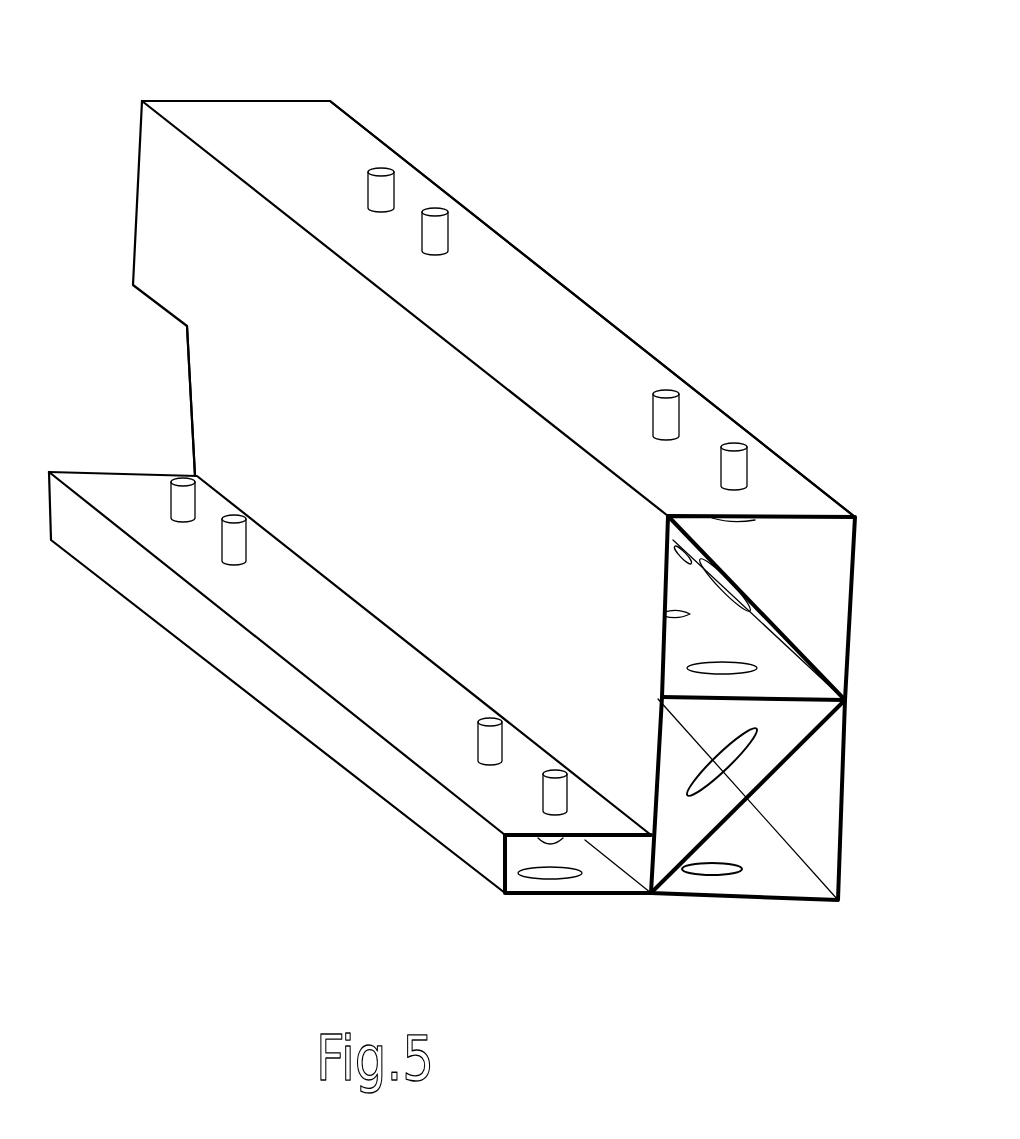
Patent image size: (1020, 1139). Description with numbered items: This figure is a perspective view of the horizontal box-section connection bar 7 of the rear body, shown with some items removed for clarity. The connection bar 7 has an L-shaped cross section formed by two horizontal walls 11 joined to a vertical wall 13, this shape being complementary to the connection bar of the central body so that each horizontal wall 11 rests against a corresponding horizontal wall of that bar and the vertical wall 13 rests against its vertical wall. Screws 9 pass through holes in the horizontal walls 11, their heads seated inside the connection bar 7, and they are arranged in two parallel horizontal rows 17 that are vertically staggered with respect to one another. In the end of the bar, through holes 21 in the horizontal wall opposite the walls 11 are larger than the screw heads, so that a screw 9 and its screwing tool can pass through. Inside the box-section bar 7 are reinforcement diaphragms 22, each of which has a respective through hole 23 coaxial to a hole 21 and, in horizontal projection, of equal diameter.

The connection bar 7 is at (188, 724).
The screw 9 is at (438, 232).
The horizontal wall 11 is at (259, 126).
The vertical wall 13 is at (154, 196).
The horizontal rows 17 is at (737, 352).
The through hole 21 is at (712, 869).
The reinforcement diaphragm 22 is at (792, 760).
The through hole 23 is at (722, 763).